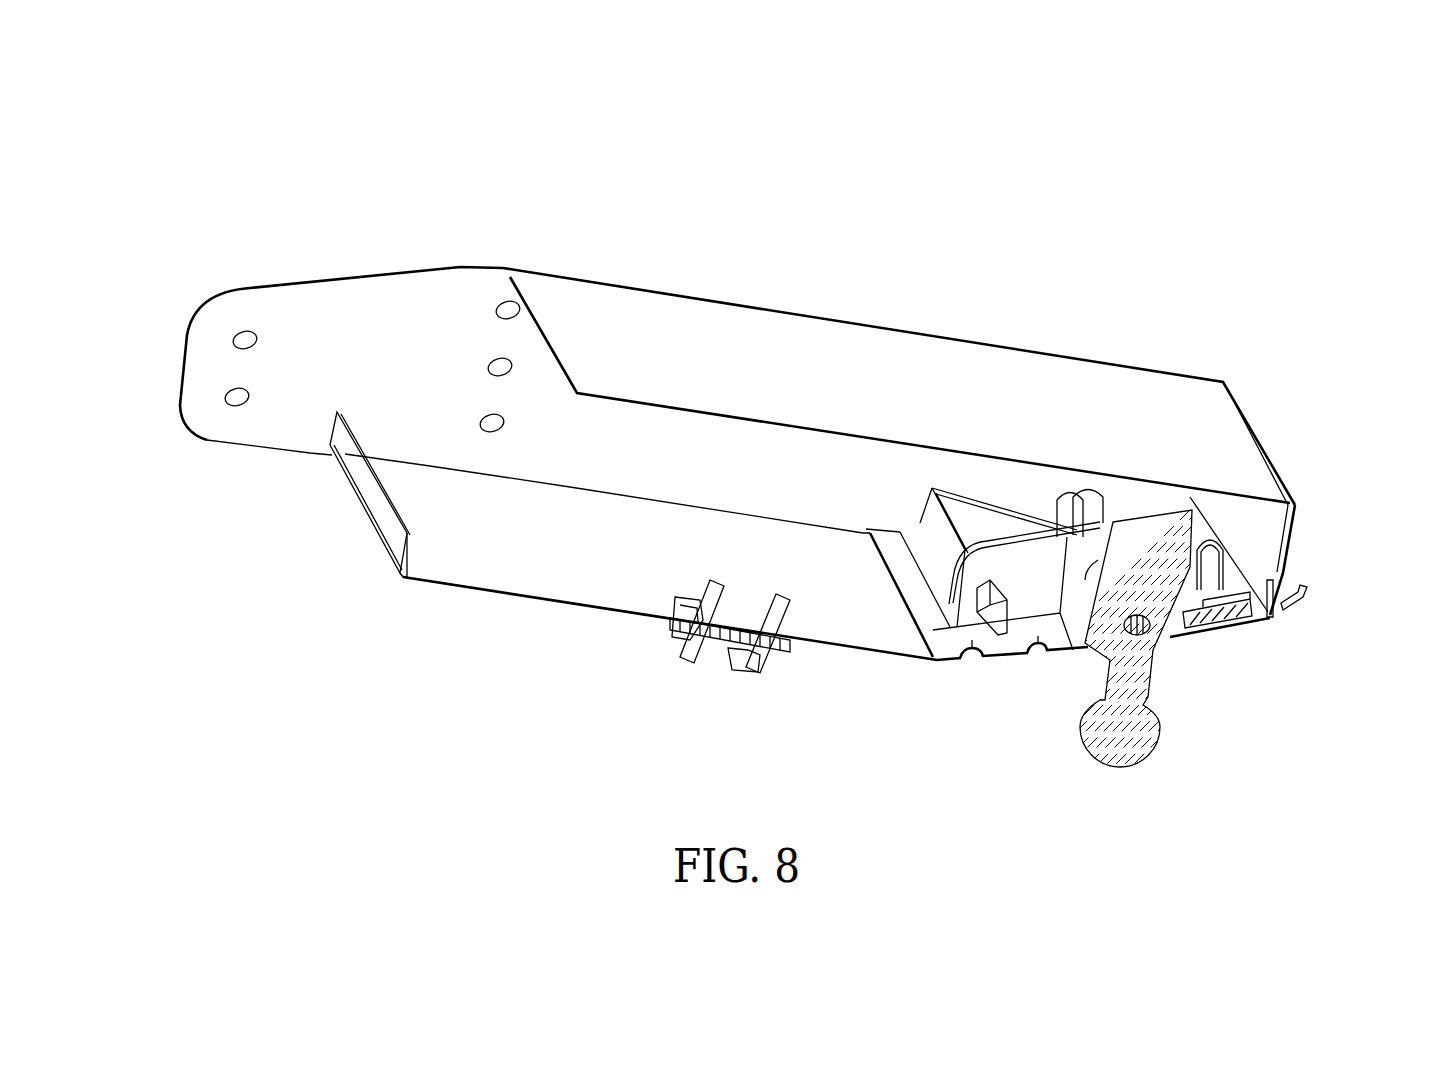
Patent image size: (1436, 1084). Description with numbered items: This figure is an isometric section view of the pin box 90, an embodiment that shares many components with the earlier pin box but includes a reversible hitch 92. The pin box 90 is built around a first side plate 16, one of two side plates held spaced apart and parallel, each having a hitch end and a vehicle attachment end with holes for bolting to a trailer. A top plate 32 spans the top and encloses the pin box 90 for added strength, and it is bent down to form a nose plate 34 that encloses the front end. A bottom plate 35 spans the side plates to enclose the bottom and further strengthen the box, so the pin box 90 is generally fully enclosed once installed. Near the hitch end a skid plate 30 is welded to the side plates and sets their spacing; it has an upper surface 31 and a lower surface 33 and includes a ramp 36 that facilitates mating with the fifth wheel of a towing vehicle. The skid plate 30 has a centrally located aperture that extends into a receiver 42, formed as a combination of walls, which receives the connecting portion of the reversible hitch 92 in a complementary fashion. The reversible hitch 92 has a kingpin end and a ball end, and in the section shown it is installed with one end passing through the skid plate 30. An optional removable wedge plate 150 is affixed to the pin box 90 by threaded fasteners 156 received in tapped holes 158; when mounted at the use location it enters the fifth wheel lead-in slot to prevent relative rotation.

The pin box 90 is at (827, 227).
The first side plate 16 is at (606, 458).
The top plate 32 is at (759, 380).
The nose plate 34 is at (1270, 527).
The ramp 36 is at (1297, 583).
The bottom plate 35 is at (505, 563).
The skid plate 30 is at (1017, 667).
The upper surface 31 is at (950, 647).
The lower surface 33 is at (987, 667).
The receiver 42 is at (1093, 547).
The reversible hitch 92 is at (1183, 683).
The wedge plate 150 is at (790, 645).
The threaded fasteners 156 is at (747, 670).
The tapped holes 158 is at (697, 587).